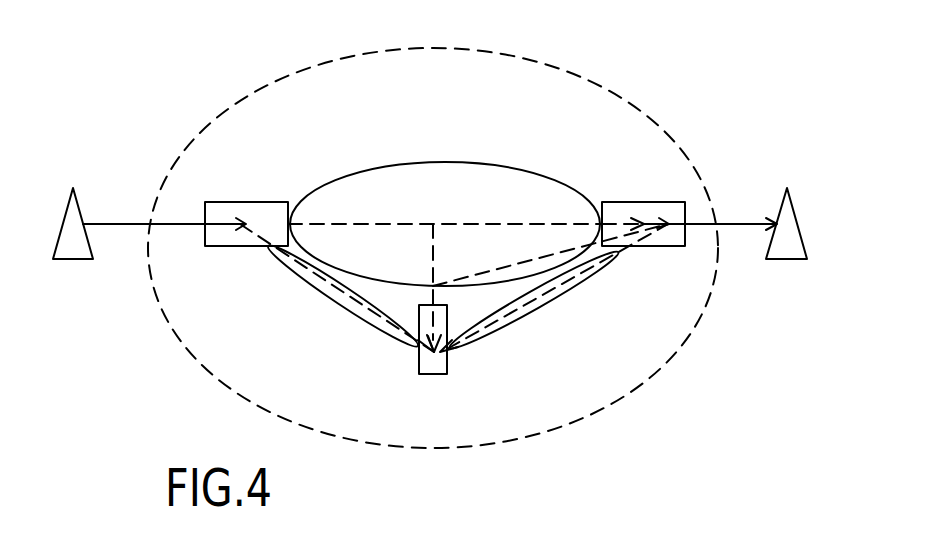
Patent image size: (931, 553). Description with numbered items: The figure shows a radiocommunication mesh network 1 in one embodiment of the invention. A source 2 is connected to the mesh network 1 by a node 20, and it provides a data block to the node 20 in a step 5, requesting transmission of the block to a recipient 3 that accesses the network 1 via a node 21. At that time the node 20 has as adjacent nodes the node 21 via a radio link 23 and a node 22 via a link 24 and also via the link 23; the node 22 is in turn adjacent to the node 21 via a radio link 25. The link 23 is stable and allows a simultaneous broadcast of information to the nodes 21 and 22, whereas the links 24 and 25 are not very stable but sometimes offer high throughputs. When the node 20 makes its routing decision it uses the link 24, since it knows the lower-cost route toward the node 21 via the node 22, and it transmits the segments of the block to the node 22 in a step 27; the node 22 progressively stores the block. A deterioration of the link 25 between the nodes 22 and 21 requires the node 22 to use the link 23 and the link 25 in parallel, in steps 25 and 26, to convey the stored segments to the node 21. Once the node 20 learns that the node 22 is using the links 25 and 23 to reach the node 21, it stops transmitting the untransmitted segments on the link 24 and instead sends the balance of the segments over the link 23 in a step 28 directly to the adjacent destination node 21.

The mesh network 1 is at (249, 96).
The source 2 is at (72, 215).
The recipient 3 is at (794, 228).
The step 5 is at (125, 222).
The node 20 is at (250, 201).
The node 21 is at (648, 208).
The node 22 is at (445, 372).
The radio link 23 is at (355, 170).
The link 24 is at (361, 321).
The radio link 25 is at (538, 312).
The step 26 is at (492, 270).
The step 27 is at (340, 292).
The step 28 is at (510, 224).